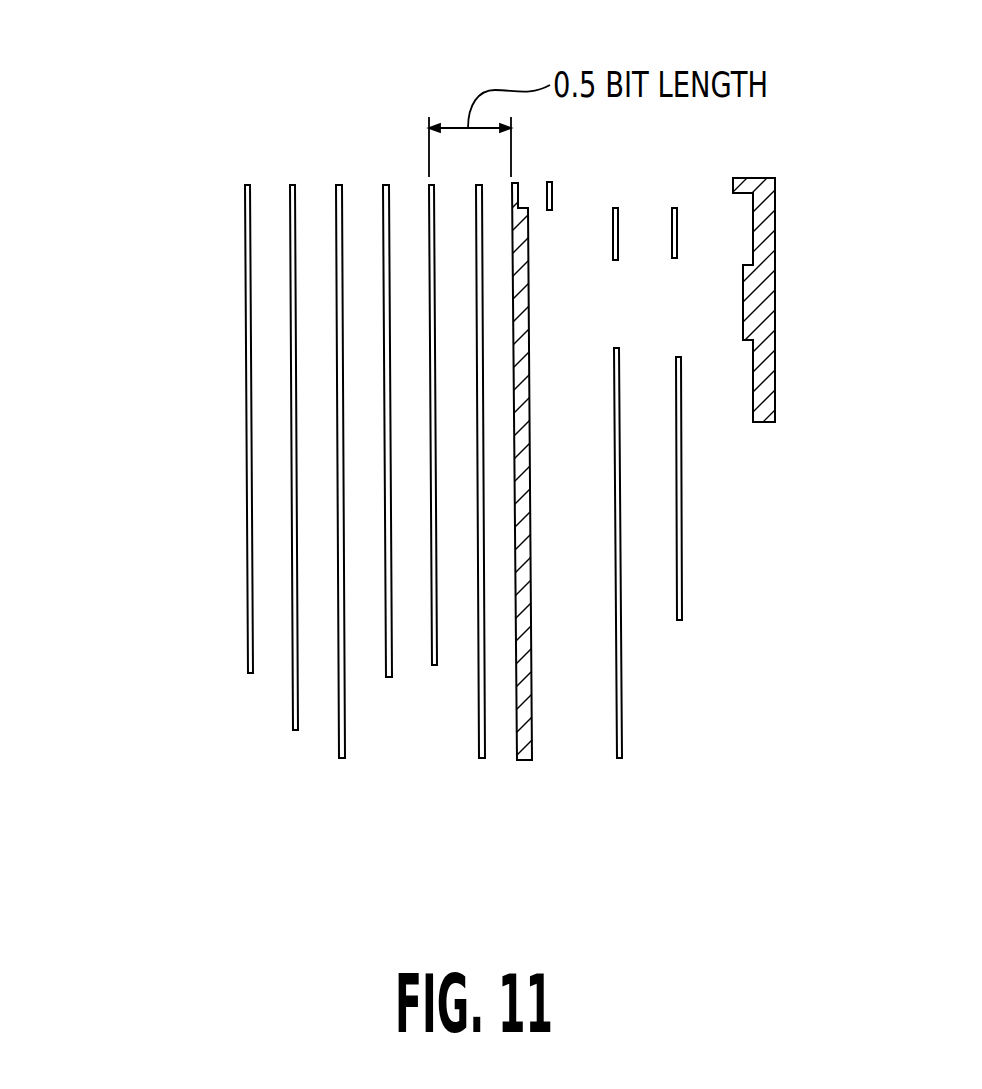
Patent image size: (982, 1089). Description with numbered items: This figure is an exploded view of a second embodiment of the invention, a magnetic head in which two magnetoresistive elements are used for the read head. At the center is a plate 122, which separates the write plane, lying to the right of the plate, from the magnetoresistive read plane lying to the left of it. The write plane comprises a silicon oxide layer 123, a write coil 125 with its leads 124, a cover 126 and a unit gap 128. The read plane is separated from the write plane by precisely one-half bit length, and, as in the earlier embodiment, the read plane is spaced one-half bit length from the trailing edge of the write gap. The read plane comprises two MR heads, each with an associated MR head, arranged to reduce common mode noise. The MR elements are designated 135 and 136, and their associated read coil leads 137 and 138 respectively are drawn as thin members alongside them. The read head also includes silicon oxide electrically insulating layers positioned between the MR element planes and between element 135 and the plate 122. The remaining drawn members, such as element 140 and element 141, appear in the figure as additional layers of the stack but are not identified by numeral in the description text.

The plate 122 is at (530, 708).
The silicon oxide layer 123 is at (622, 677).
The leads 124 is at (673, 207).
The write coil 125 is at (682, 610).
The cover 126 is at (768, 302).
The unit gap 128 is at (553, 188).
The MR element 135 is at (432, 665).
The MR element 136 is at (292, 187).
The read coil lead 137 is at (382, 185).
The read coil lead 138 is at (247, 622).
The shield 140 is at (482, 760).
The lead 141 is at (338, 188).